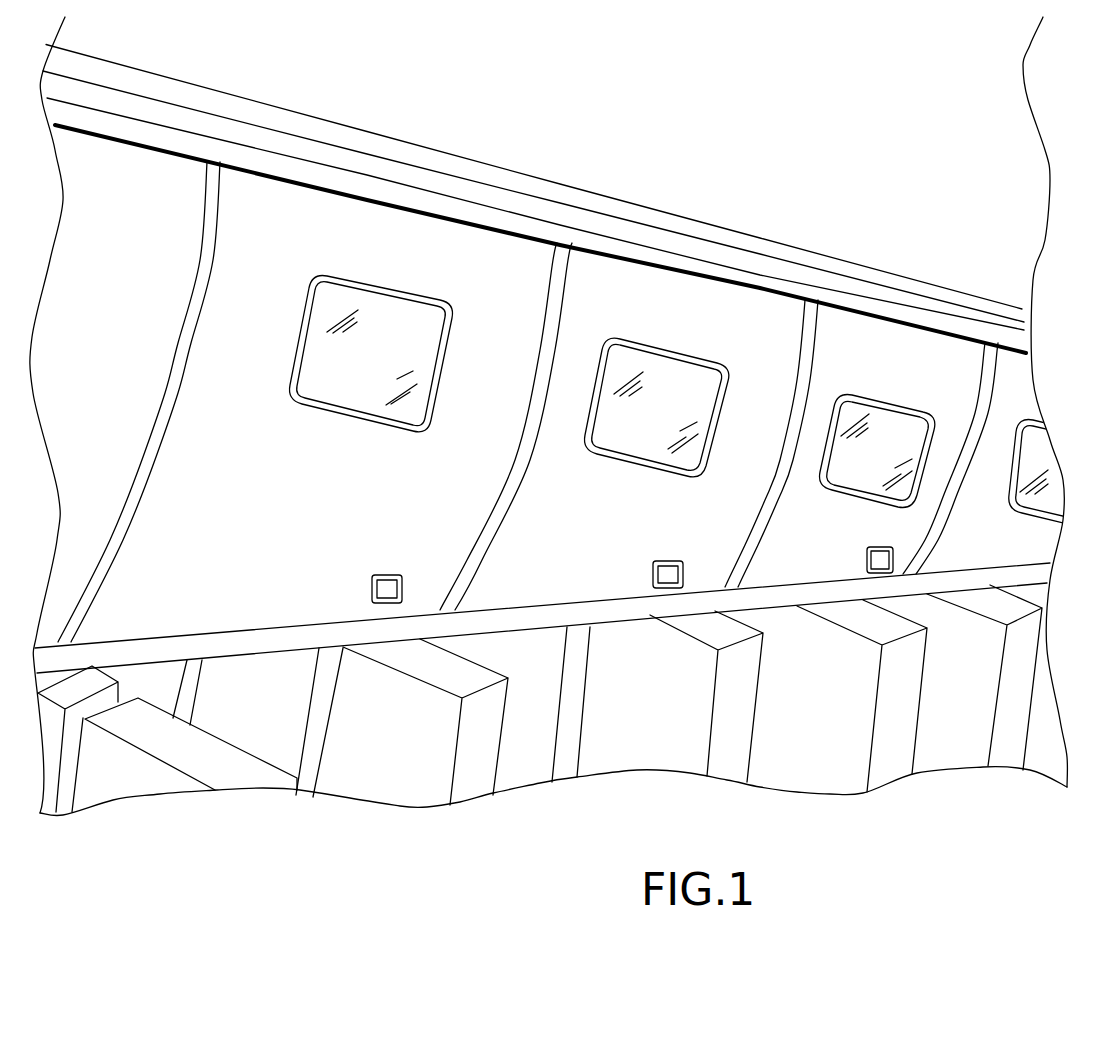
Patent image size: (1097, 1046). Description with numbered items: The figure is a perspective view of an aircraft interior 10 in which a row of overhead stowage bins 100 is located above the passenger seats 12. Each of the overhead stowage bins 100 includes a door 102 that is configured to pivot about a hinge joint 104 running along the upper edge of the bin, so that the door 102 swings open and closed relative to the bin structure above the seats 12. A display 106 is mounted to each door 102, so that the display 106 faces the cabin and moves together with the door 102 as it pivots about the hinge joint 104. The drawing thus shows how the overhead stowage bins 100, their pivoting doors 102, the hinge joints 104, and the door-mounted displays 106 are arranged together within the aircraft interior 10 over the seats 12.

The aircraft interior 10 is at (1008, 129).
The seats 12 is at (135, 785).
The overhead stowage bins 100 is at (423, 237).
The door 102 is at (310, 510).
The hinge joint 104 is at (328, 190).
The display 106 is at (388, 370).